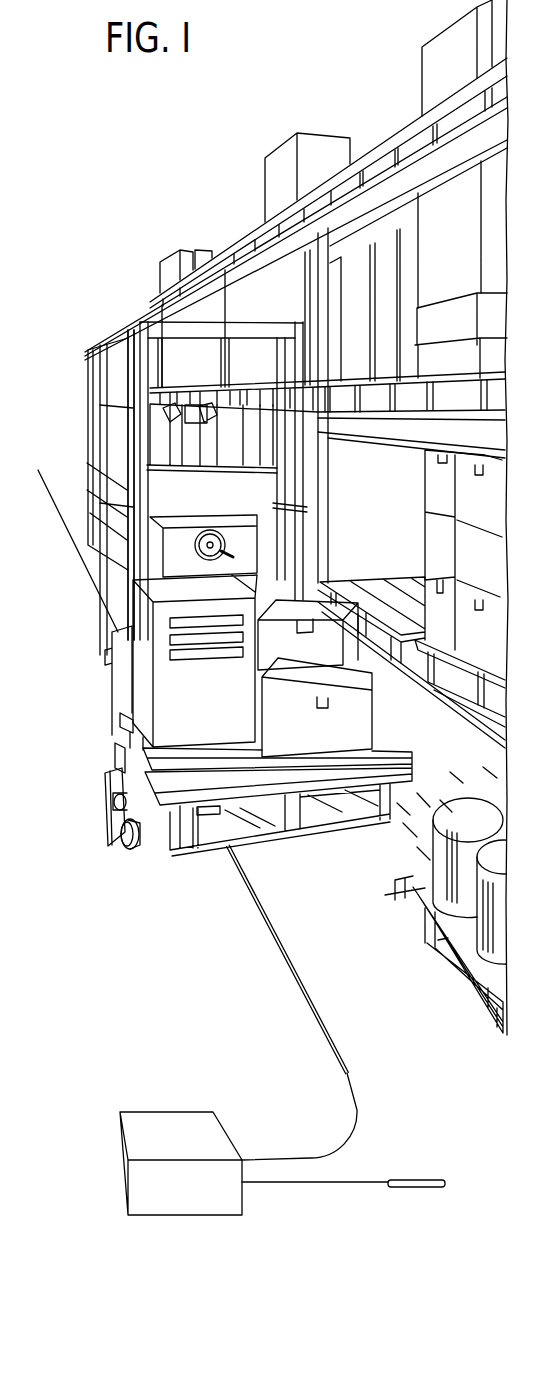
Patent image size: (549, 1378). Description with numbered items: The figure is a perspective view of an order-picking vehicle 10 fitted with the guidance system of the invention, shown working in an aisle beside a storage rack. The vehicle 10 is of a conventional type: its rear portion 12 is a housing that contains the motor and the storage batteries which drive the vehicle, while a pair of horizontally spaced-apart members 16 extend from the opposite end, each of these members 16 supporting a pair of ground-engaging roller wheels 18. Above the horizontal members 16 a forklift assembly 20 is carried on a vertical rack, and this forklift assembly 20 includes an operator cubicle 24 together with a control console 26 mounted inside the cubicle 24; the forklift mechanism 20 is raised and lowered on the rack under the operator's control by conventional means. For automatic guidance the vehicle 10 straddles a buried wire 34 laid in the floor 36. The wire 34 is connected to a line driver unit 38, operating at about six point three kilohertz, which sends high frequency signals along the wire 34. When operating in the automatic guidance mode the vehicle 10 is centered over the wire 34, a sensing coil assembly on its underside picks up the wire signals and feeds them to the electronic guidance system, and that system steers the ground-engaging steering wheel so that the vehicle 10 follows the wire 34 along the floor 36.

The order-picking vehicle 10 is at (116, 680).
The rear portion 12 is at (548, 463).
The horizontally spaced-apart members 16 is at (118, 783).
The roller wheels 18 is at (139, 833).
The forklift assembly 20 is at (205, 819).
The operator cubicle 24 is at (133, 415).
The control console 26 is at (253, 547).
The buried wire 34 is at (274, 928).
The floor 36 is at (360, 967).
The line driver unit 38 is at (222, 1126).